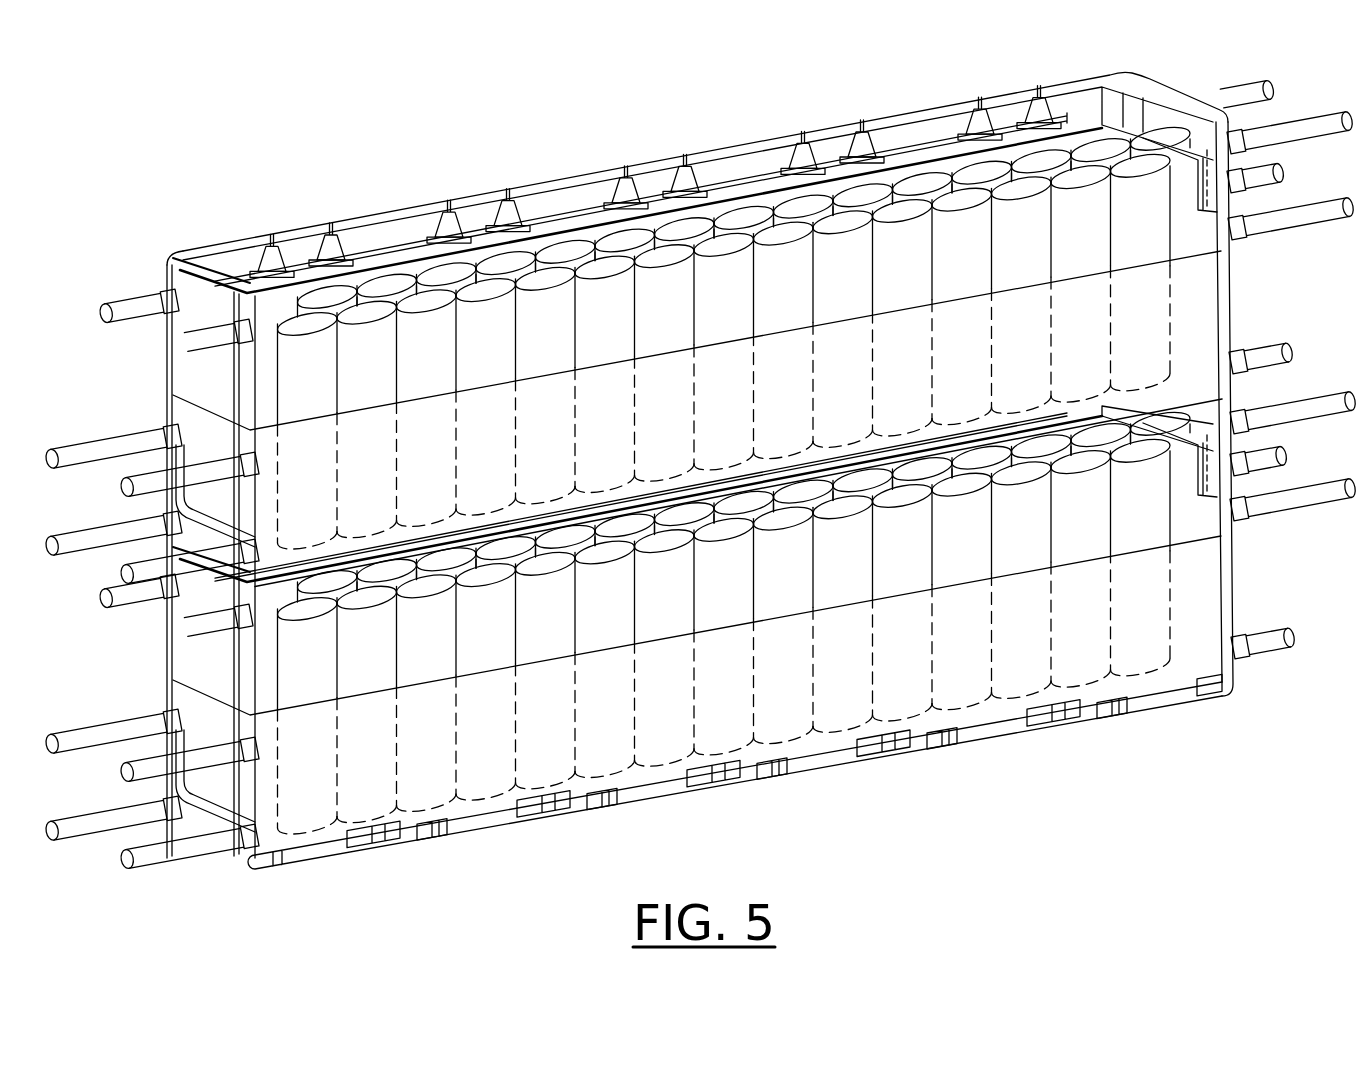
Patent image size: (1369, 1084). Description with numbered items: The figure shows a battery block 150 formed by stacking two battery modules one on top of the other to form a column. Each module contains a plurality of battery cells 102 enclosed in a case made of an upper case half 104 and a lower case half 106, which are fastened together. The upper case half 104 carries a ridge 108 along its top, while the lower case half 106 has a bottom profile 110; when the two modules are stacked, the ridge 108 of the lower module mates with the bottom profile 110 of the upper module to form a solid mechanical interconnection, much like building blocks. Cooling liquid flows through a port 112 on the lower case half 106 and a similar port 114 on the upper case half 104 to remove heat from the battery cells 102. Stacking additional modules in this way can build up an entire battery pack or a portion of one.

The battery block 150 is at (203, 79).
The battery cells 102 is at (1155, 221).
The upper case half 104 is at (170, 345).
The lower case half 106 is at (1233, 304).
The ridge 108 is at (572, 180).
The bottom profile 110 is at (830, 769).
The port 112 is at (198, 438).
The port 114 is at (1208, 167).